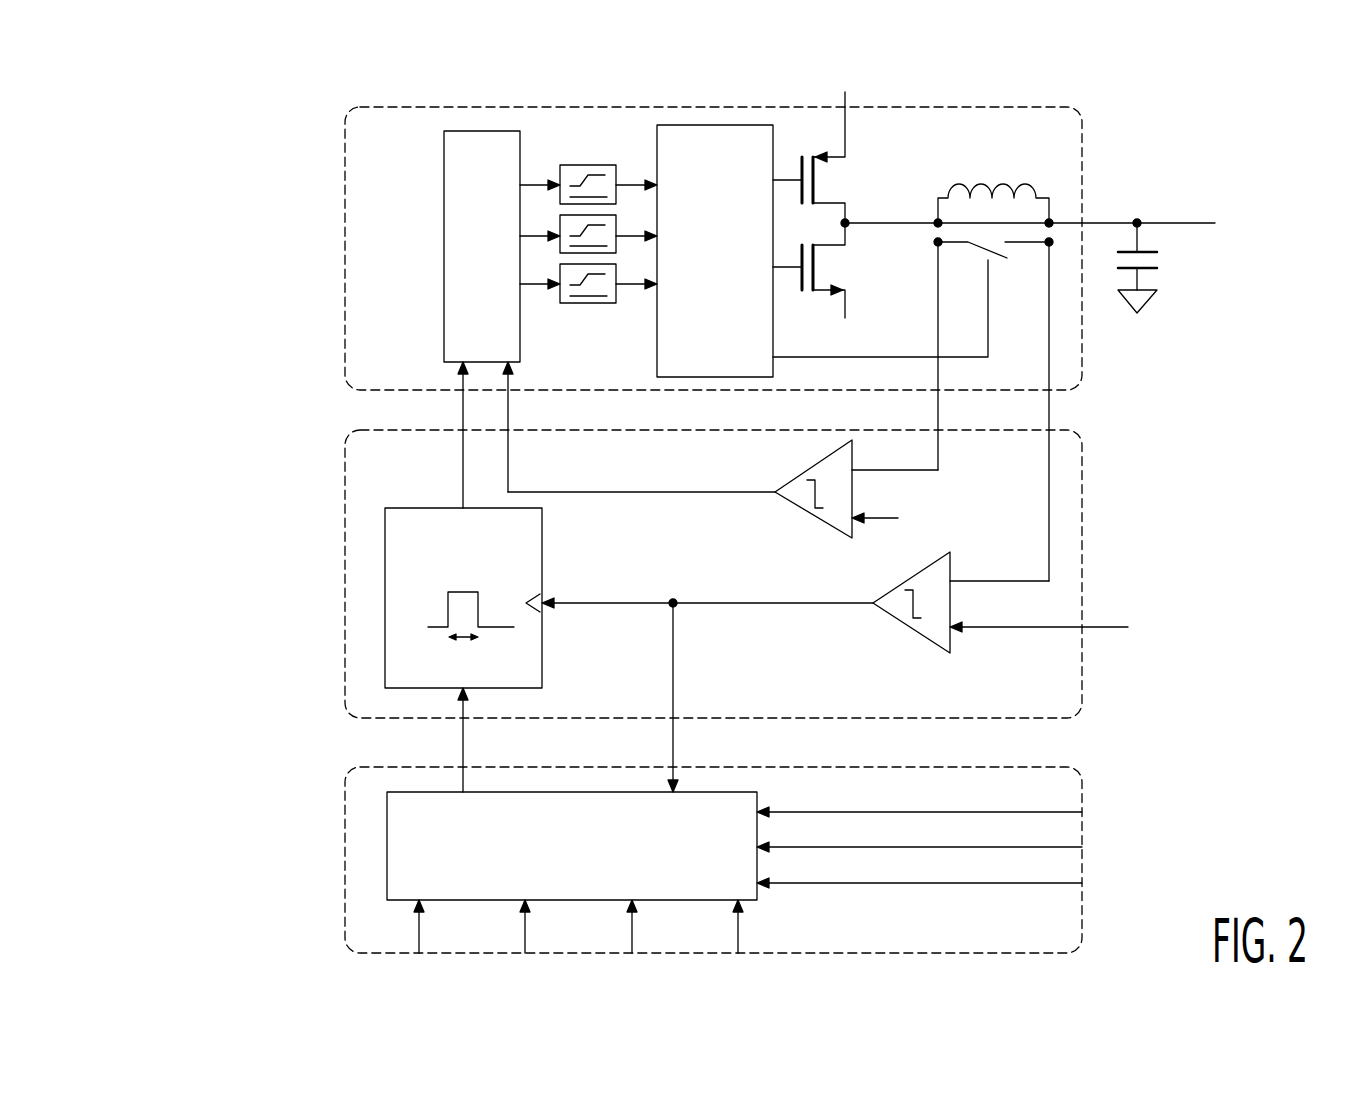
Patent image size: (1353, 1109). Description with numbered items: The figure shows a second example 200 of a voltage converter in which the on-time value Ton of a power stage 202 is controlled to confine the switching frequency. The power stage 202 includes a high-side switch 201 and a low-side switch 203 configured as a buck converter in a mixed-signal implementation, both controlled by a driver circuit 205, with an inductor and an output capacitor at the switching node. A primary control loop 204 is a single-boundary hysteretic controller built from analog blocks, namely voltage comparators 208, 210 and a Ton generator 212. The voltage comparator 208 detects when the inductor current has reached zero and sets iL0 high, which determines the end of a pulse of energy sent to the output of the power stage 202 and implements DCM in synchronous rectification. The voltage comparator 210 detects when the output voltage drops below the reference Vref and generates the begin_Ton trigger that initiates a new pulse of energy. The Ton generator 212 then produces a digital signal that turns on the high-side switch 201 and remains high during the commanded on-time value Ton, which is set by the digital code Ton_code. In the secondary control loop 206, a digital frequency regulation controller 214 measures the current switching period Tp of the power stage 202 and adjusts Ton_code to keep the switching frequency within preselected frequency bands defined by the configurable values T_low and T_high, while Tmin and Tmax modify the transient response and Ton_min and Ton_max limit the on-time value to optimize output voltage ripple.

The voltage converter 200 is at (140, 180).
The high-side switch 201 is at (816, 177).
The power stage 202 is at (345, 205).
The low-side switch 203 is at (818, 262).
The primary control loop 204 is at (345, 470).
The driver circuit 205 is at (657, 343).
The secondary control loop 206 is at (345, 868).
The voltage comparator 208 is at (792, 480).
The voltage comparator 210 is at (898, 620).
The Ton generator 212 is at (420, 508).
The digital frequency regulation controller 214 is at (387, 818).